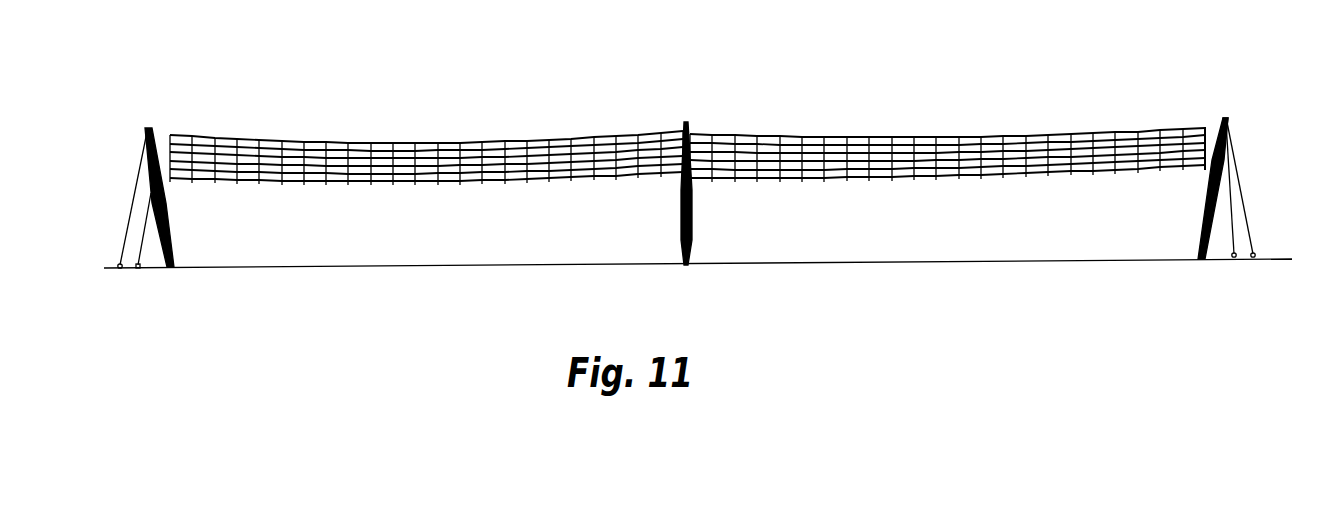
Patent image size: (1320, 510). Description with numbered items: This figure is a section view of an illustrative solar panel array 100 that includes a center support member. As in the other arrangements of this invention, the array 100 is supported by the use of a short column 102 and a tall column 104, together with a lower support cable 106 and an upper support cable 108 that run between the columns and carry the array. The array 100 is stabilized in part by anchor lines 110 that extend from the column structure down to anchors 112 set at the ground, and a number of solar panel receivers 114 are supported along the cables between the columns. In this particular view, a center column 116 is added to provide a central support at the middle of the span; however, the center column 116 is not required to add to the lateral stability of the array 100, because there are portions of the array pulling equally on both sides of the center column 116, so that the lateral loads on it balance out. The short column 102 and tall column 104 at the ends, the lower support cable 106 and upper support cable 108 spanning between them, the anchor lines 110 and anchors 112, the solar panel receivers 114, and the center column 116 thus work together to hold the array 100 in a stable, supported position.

The solar panel array 100 is at (901, 96).
The short column 102 is at (1202, 235).
The tall column 104 is at (1227, 138).
The lower support cable 106 is at (1213, 165).
The upper support cable 108 is at (1208, 121).
The anchor lines 110 is at (1243, 200).
The anchors 112 is at (1260, 251).
The solar panel receivers 114 is at (1083, 143).
The center column 116 is at (690, 227).